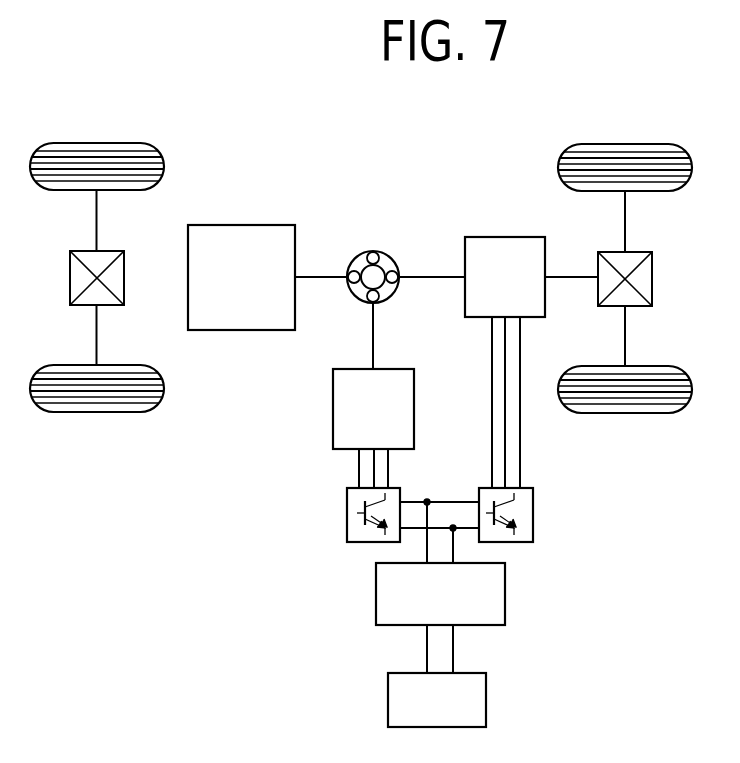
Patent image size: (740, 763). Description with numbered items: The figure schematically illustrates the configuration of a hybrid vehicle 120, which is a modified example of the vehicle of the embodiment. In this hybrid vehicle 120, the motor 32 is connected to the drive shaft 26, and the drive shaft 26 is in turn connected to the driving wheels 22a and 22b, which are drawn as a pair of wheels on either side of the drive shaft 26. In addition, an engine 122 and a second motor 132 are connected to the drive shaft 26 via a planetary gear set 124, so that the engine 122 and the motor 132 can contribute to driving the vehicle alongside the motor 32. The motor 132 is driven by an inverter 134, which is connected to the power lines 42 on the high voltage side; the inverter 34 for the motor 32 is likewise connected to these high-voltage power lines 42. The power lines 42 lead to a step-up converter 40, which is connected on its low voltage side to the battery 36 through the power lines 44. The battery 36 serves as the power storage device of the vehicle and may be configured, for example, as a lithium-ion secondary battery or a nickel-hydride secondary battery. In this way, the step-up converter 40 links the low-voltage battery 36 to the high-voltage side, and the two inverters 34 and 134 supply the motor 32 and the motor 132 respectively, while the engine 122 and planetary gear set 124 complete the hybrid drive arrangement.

The hybrid vehicle 120 is at (460, 130).
The engine 122 is at (242, 224).
The planetary gear set 124 is at (374, 250).
The motor 32 is at (507, 237).
The drive shaft 26 is at (572, 276).
The driving wheel 22a is at (625, 143).
The driving wheel 22b is at (625, 414).
The motor 132 is at (400, 368).
The inverter 134 is at (346, 515).
The inverter 34 is at (534, 515).
The power lines 42 is at (447, 527).
The step-up converter 40 is at (505, 594).
The power lines 44 is at (428, 638).
The battery 36 is at (486, 700).